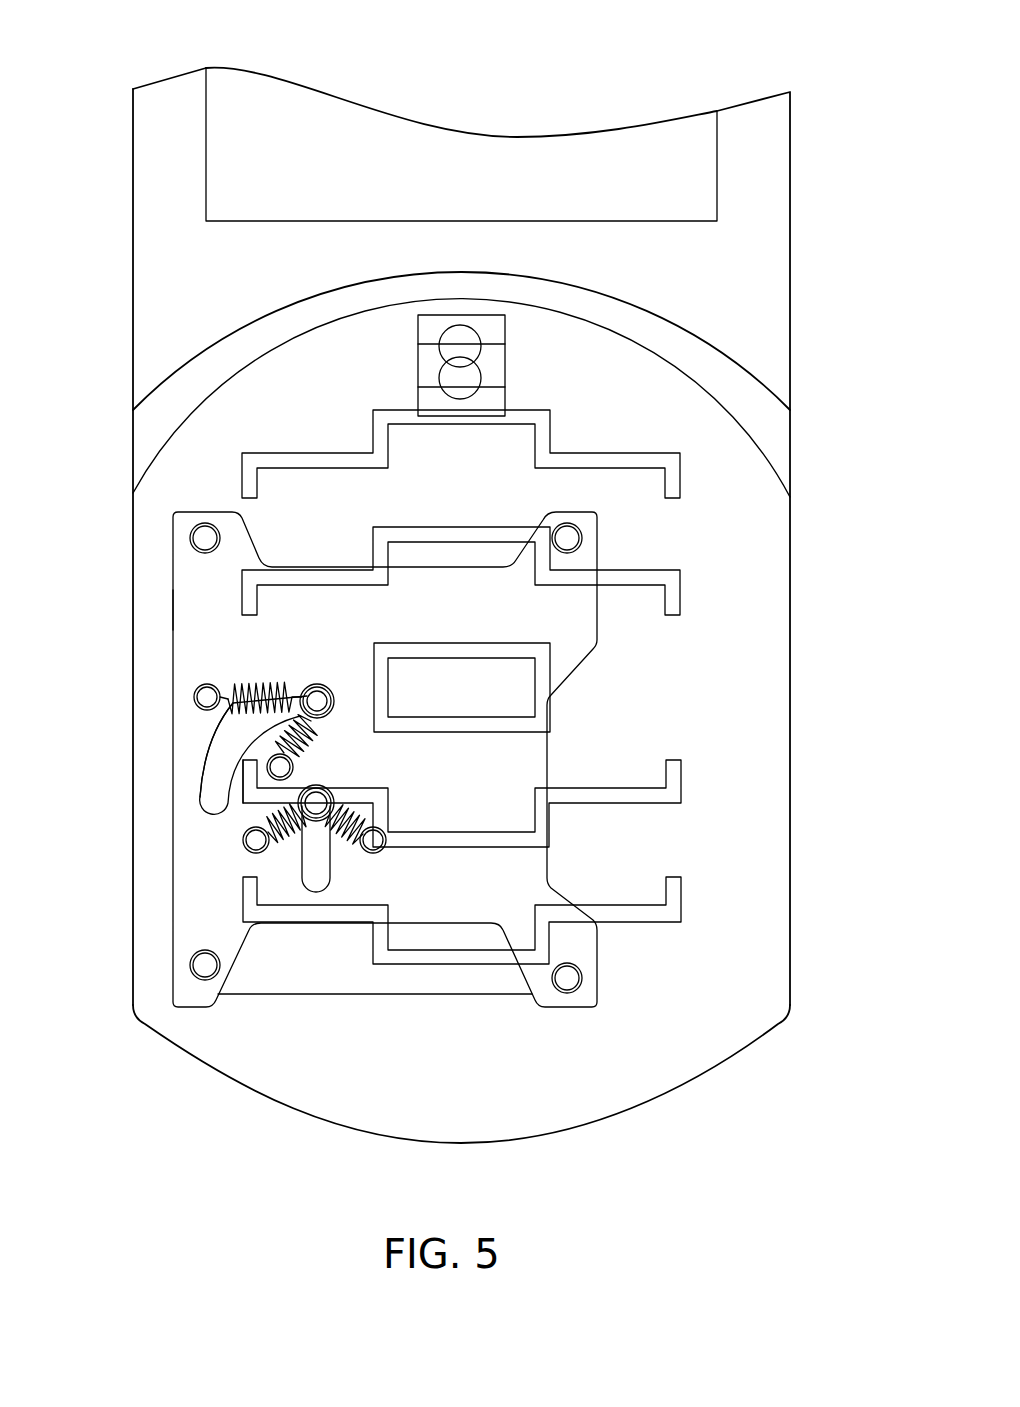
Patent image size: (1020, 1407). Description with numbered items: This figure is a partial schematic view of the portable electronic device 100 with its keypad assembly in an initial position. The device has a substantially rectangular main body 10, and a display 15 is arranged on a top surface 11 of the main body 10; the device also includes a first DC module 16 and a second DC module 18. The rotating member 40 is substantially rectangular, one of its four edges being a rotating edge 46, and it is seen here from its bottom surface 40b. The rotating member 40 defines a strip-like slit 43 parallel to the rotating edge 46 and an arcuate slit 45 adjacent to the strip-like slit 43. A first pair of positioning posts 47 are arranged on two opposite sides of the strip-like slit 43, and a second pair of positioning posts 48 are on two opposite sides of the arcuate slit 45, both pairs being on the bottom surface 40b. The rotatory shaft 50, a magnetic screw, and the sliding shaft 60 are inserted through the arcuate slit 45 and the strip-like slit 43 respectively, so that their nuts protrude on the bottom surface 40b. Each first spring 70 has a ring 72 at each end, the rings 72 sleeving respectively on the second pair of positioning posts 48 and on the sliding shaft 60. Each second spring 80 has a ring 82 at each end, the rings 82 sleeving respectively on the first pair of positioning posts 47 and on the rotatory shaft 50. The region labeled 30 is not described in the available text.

The portable electronic device 100 is at (506, 70).
The main body 10 is at (791, 274).
The top surface 11 is at (172, 307).
The display 15 is at (230, 177).
The first DC module 16 is at (470, 382).
The second DC module 18 is at (492, 328).
The mounting plate 30 is at (747, 726).
The rotating member 40 is at (198, 583).
The bottom surface 40b is at (570, 630).
The strip-like slit 43 is at (317, 873).
The arcuate slit 45 is at (213, 797).
The rotating edge 46 is at (170, 610).
The first pair of positioning posts 47 is at (220, 712).
The second pair of positioning posts 48 is at (246, 851).
The rotatory shaft 50 is at (314, 688).
The sliding shaft 60 is at (318, 810).
The first spring 70 is at (265, 822).
The ring 72 is at (250, 832).
The second spring 80 is at (245, 676).
The ring 82 is at (203, 684).